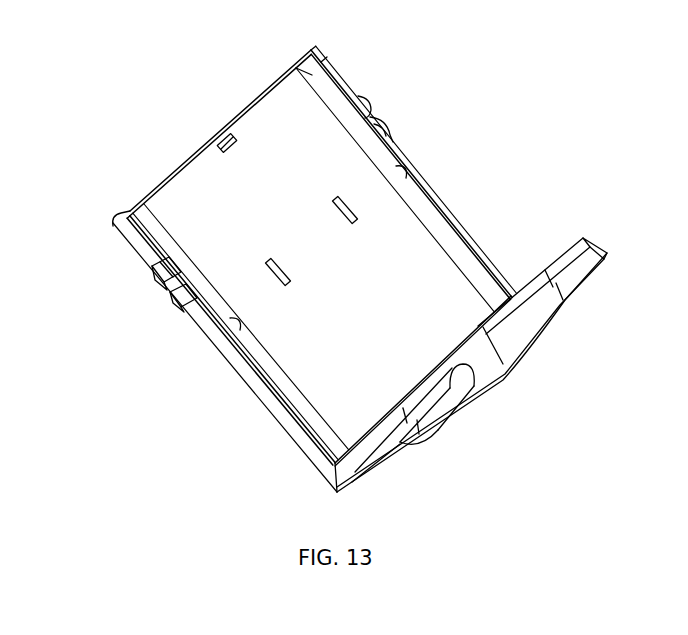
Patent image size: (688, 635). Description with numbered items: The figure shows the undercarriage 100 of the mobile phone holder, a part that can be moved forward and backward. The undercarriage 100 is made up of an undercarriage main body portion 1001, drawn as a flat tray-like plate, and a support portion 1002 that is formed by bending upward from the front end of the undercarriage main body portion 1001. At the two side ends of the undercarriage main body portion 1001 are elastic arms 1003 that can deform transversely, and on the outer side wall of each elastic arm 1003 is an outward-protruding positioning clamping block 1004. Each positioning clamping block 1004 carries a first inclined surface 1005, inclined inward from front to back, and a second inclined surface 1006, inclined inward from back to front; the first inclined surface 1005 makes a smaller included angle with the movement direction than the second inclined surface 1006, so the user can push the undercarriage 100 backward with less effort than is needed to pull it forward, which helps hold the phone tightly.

The undercarriage 100 is at (523, 350).
The undercarriage main body portion 1001 is at (433, 243).
The support portion 1002 is at (430, 403).
The elastic arm 1003 is at (177, 320).
The positioning clamping block 1004 is at (150, 277).
The first inclined surface 1005 is at (365, 97).
The second inclined surface 1006 is at (376, 112).